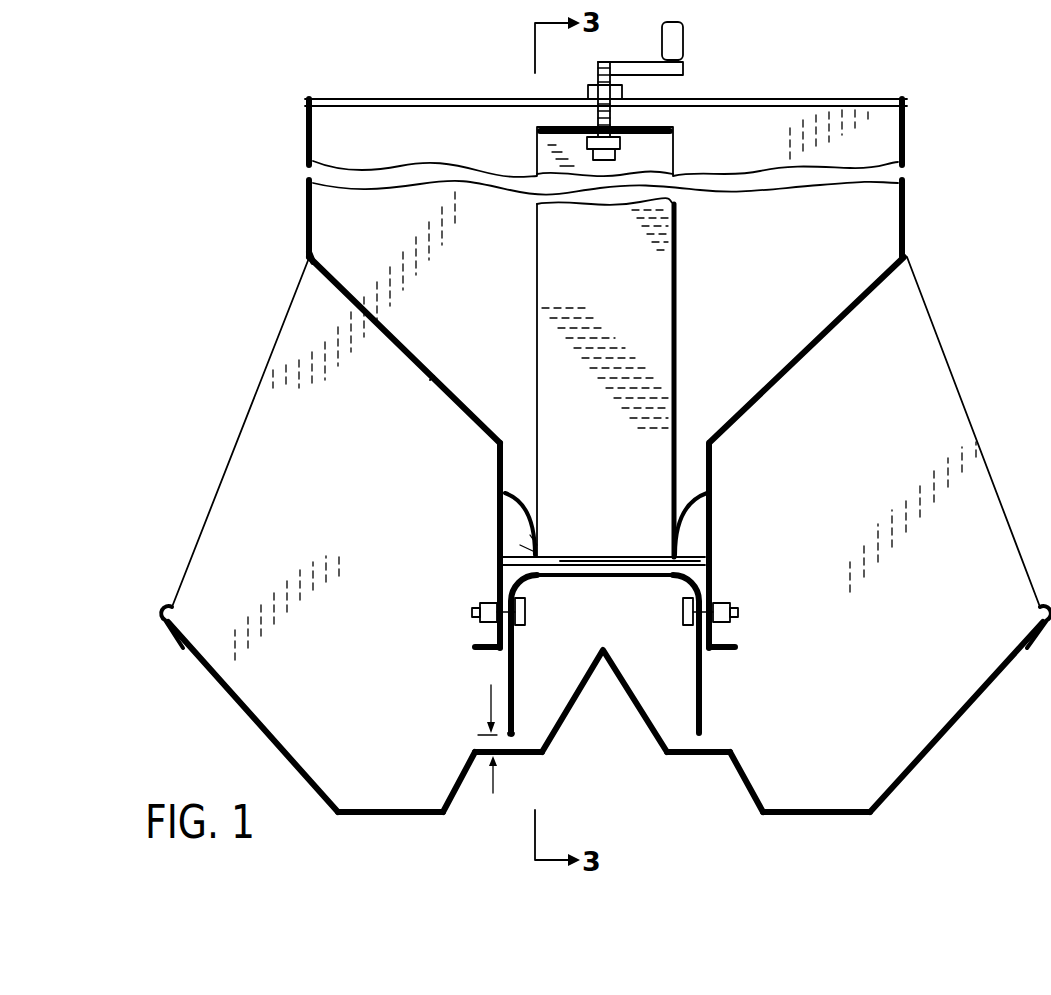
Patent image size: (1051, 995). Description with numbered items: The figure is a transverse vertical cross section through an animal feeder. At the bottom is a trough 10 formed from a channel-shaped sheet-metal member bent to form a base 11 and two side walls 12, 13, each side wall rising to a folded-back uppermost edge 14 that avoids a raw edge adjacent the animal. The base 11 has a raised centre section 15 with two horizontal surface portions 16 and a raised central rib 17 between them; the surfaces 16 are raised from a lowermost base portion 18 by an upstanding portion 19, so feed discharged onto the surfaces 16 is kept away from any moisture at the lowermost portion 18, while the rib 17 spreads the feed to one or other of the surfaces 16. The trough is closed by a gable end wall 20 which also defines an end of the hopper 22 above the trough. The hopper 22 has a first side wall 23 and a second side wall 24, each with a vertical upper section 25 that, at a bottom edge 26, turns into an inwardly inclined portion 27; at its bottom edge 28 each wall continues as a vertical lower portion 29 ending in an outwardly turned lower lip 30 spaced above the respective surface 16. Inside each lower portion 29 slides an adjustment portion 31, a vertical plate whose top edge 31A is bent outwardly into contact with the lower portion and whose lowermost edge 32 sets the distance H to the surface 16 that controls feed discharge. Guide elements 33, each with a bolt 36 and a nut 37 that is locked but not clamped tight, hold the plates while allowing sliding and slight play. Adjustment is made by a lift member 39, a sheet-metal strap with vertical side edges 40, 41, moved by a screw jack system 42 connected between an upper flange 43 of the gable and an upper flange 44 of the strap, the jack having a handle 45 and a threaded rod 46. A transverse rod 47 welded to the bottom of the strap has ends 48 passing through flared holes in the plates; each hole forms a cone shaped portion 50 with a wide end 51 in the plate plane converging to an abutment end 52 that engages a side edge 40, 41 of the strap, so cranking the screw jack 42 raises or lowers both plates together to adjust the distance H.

The trough 10 is at (584, 563).
The base 11 is at (609, 798).
The side wall 12 is at (268, 728).
The side wall 13 is at (943, 725).
The uppermost edge 14 is at (168, 612).
The raised centre section 15 is at (608, 751).
The horizontal surface portions 16 is at (520, 758).
The raised central rib 17 is at (576, 700).
The lowermost base portion 18 is at (397, 815).
The upstanding portion 19 is at (460, 778).
The end wall 20 is at (243, 522).
The hopper 22 is at (571, 467).
The first side wall 23 is at (400, 350).
The second side wall 24 is at (845, 315).
The vertical upper section 25 is at (305, 200).
The bottom edge 26 is at (305, 257).
The inclined portion 27 is at (432, 382).
The bottom edge 28 is at (497, 450).
The vertical lower portion 29 is at (713, 470).
The lower lip 30 is at (478, 650).
The adjustment portion 31 is at (603, 655).
The top edge 31A is at (510, 480).
The lowermost edge 32 is at (518, 732).
The guide element 33 is at (734, 609).
The bolt 36 is at (525, 615).
The nut 37 is at (487, 603).
The lift member 39 is at (604, 377).
The side edge 40 is at (537, 355).
The side edge 41 is at (673, 305).
The screw jack system 42 is at (622, 40).
The upper flange 43 is at (780, 99).
The upper flange 44 is at (662, 130).
The handle 45 is at (690, 40).
The threaded rod 46 is at (598, 115).
The transverse rod 47 is at (642, 555).
The ends 48 is at (520, 560).
The cone shaped portion 50 is at (537, 560).
The wide end 51 is at (540, 545).
The abutment end 52 is at (540, 578).
The distance H is at (488, 738).